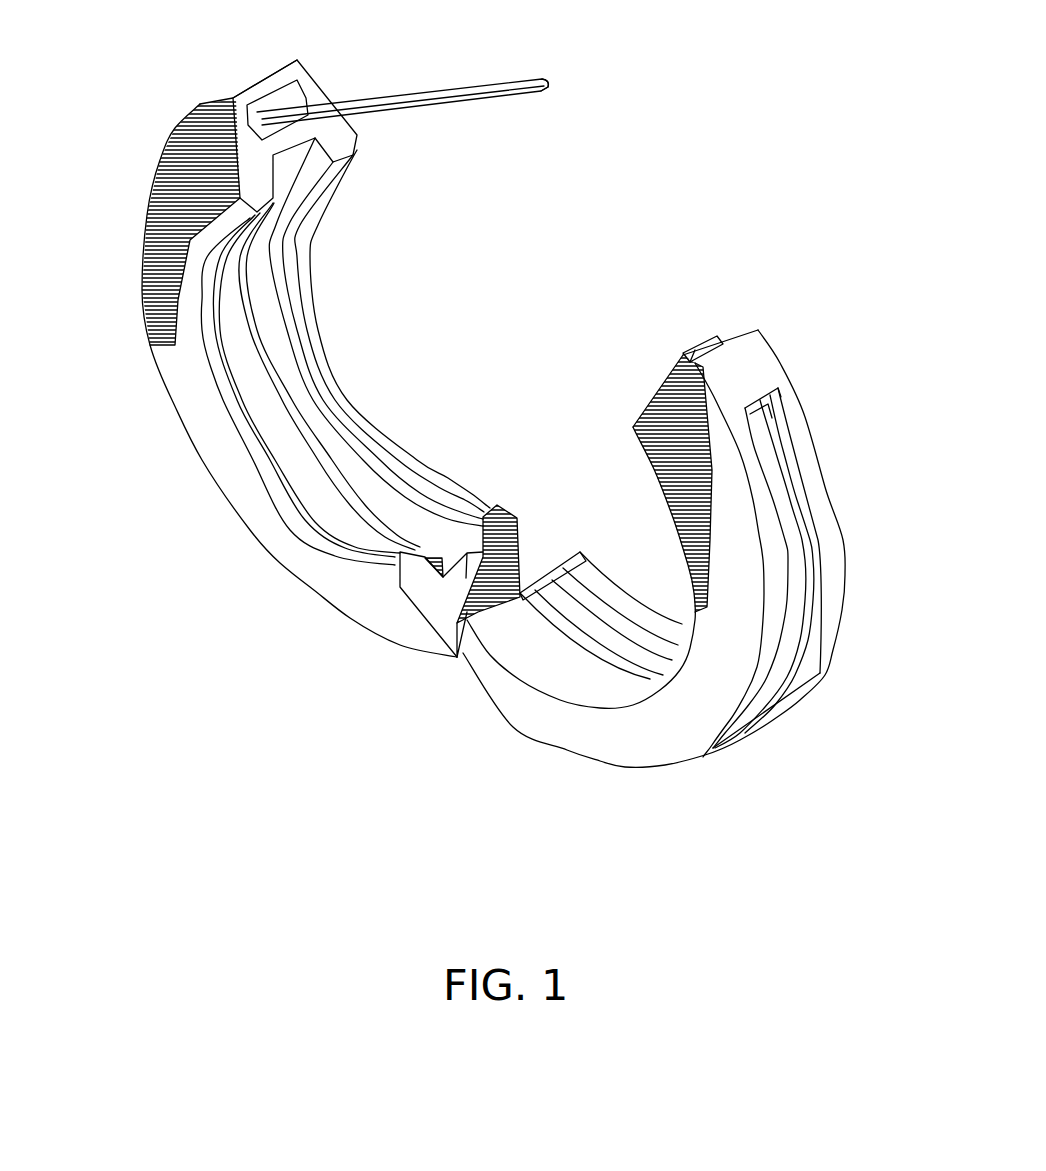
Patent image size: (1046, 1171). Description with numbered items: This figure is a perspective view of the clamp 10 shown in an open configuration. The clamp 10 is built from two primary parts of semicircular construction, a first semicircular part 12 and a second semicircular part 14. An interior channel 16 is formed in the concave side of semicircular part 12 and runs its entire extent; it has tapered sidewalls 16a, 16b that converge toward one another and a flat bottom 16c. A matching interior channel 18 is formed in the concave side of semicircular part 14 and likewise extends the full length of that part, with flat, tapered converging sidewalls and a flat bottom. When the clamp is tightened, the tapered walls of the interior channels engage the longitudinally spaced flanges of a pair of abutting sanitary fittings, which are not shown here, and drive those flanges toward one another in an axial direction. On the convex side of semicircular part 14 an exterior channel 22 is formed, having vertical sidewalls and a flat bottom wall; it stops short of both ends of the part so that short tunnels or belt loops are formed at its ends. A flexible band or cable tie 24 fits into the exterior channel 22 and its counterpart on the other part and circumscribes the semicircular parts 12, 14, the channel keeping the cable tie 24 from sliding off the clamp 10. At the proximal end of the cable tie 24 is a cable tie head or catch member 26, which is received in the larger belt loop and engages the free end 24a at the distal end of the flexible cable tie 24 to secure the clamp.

The clamp 10 is at (665, 132).
The semicircular part 12 is at (145, 212).
The semicircular part 14 is at (832, 437).
The interior channel 16 is at (272, 382).
The tapered sidewall 16a is at (483, 533).
The tapered sidewall 16b is at (461, 557).
The flat bottom 16c is at (300, 457).
The interior channel 18 is at (558, 610).
The exterior channel 22 is at (808, 578).
The flexible cable tie 24 is at (462, 80).
The free end 24a is at (545, 88).
The cable tie head 26 is at (703, 340).